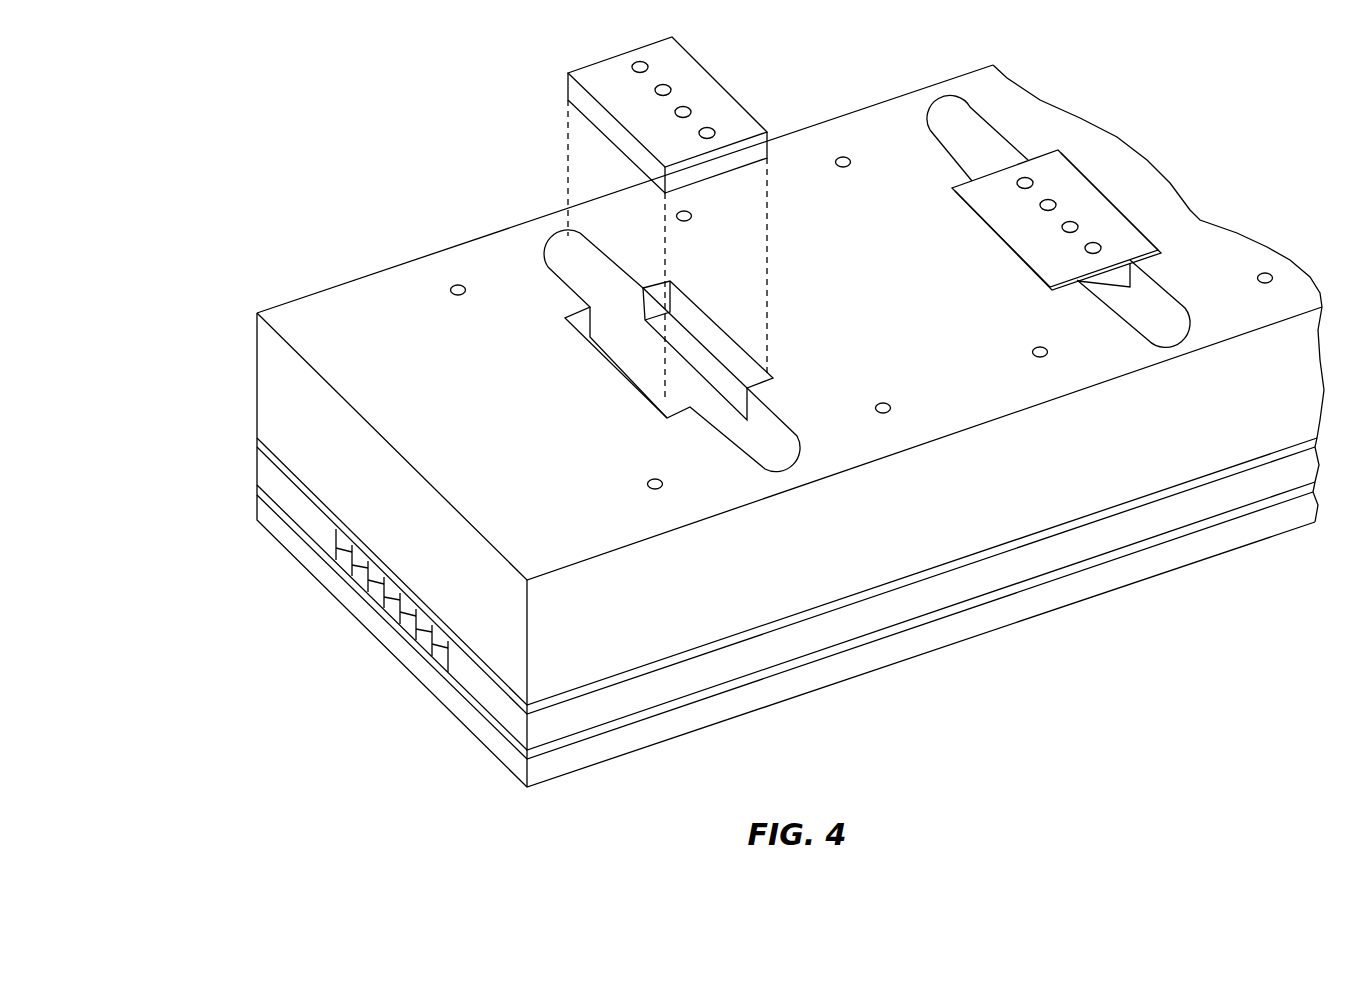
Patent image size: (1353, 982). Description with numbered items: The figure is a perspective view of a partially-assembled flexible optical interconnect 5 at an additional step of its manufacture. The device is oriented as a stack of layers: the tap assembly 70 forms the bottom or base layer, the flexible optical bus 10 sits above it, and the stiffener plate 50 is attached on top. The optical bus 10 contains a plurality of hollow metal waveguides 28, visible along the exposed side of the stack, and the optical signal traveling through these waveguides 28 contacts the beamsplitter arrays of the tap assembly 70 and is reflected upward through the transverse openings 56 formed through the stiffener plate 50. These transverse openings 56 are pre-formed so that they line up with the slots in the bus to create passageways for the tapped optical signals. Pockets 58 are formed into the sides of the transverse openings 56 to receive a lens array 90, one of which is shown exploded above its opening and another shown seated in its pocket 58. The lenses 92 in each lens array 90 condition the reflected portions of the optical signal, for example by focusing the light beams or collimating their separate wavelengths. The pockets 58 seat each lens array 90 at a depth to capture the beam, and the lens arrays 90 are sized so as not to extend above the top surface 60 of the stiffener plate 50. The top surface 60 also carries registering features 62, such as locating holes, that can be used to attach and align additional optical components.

The optical interconnect 5 is at (216, 225).
The flexible optical bus 10 is at (264, 469).
The hollow metal waveguides 28 is at (343, 546).
The stiffener plate 50 is at (272, 378).
The transverse openings 56 is at (1147, 307).
The pockets 58 is at (752, 367).
The top surface 60 is at (383, 307).
The registering features 62 is at (646, 485).
The tap assembly 70 is at (489, 737).
The lens array 90 is at (690, 78).
The lenses 92 is at (632, 62).